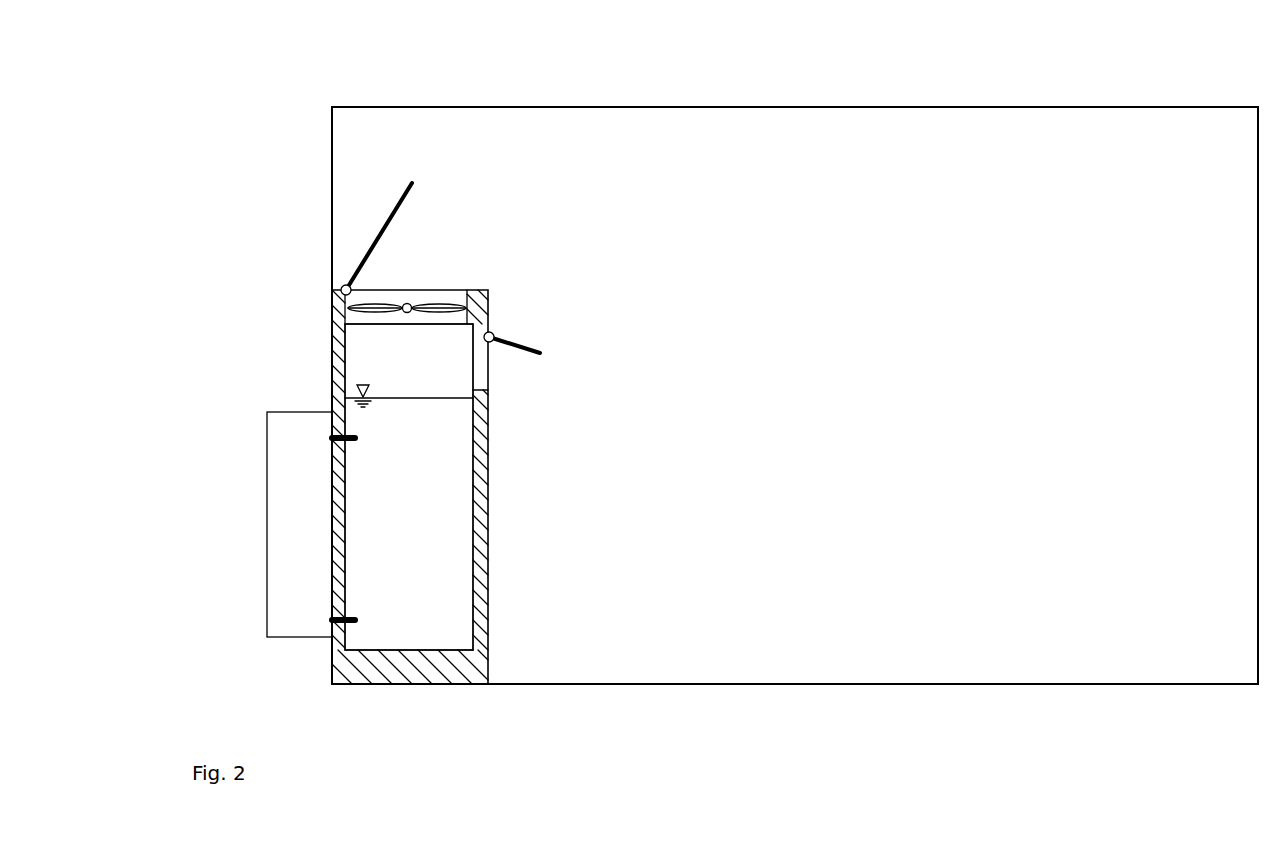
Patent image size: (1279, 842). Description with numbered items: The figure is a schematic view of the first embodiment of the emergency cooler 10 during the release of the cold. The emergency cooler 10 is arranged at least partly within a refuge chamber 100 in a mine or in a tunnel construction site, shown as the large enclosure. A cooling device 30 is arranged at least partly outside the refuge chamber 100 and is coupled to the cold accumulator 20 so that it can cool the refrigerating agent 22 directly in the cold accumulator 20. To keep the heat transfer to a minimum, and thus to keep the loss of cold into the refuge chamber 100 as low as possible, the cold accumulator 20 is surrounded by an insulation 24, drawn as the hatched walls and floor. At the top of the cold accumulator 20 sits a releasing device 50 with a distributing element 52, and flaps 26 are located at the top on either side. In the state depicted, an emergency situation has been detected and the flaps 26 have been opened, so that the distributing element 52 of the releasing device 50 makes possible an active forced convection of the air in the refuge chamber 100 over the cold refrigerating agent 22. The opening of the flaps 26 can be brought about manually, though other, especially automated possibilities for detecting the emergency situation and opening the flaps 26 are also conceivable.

The refuge chamber 100 is at (400, 107).
The emergency cooler 10 is at (278, 352).
The cold accumulator 20 is at (471, 418).
The refrigerating agent 22 is at (450, 480).
The insulation 24 is at (480, 567).
The flaps 26 is at (395, 208).
The cooling device 30 is at (278, 526).
The releasing device 50 is at (477, 268).
The distributing element 52 is at (408, 303).